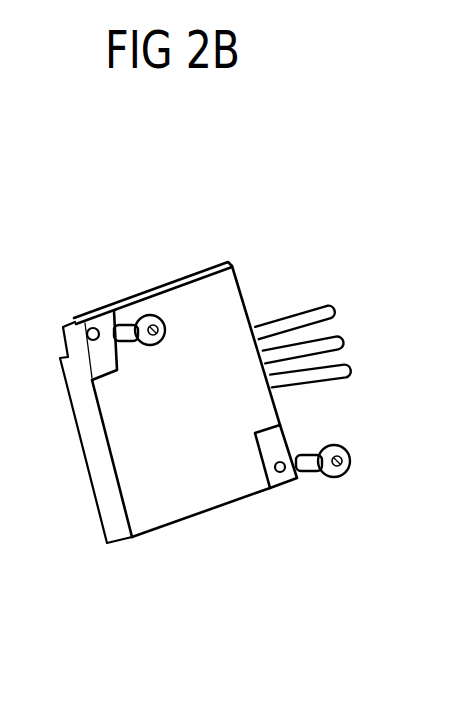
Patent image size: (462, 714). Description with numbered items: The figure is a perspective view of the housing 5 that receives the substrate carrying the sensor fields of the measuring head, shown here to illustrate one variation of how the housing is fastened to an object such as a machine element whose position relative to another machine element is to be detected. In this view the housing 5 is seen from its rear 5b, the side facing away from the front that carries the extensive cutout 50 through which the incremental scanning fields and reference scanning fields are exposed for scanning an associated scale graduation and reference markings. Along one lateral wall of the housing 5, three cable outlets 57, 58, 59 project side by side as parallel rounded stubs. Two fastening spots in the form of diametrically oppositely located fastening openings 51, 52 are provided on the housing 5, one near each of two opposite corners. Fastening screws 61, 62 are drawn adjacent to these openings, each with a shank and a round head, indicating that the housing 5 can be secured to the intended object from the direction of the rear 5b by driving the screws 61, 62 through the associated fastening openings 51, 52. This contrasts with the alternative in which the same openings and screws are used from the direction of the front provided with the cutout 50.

The housing 5 is at (227, 365).
The rear of the housing 5b is at (233, 312).
The extensive cutout 50 is at (102, 473).
The fastening opening 51 is at (282, 473).
The fastening opening 52 is at (73, 317).
The cable outlet 57 is at (322, 320).
The cable outlet 58 is at (333, 347).
The cable outlet 59 is at (342, 382).
The fastening screw 61 is at (338, 468).
The fastening screw 62 is at (140, 323).